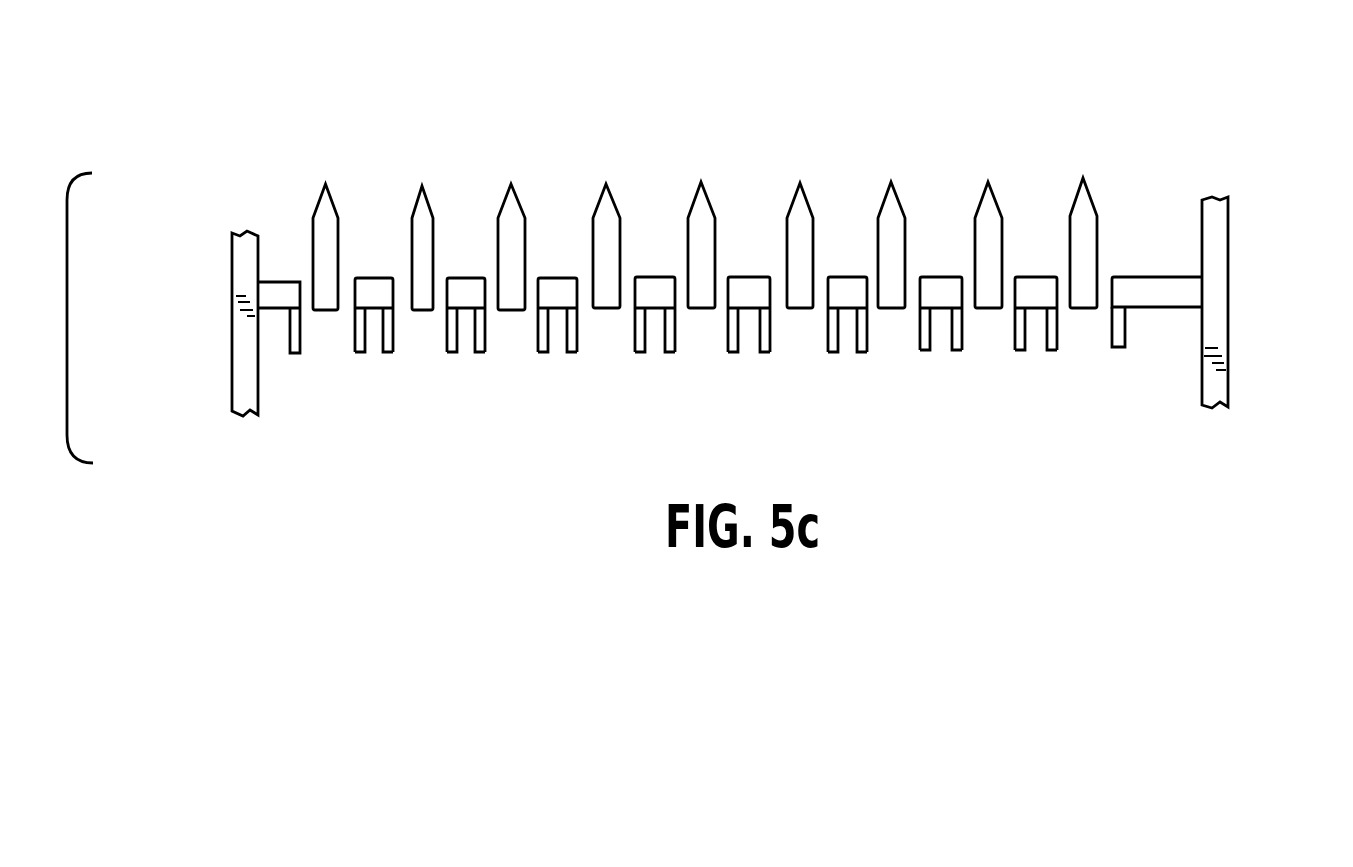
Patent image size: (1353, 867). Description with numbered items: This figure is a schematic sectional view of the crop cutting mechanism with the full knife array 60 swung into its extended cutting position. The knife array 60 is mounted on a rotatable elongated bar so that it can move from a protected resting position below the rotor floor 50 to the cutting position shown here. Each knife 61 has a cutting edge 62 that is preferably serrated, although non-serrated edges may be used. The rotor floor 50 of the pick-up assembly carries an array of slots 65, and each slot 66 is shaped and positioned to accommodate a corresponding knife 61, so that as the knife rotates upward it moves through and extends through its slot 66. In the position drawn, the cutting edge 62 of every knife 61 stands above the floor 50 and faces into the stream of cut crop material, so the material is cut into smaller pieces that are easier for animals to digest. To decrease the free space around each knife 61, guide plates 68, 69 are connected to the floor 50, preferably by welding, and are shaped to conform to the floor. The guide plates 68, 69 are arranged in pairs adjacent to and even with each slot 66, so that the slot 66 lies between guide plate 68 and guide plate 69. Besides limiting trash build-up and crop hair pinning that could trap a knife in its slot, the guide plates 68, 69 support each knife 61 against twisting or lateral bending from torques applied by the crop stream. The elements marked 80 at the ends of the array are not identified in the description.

The rotor floor 50 is at (1172, 297).
The array of knives 60 is at (296, 192).
The knife 61 is at (510, 187).
The cutting edge 62 is at (612, 220).
The array of slots 65 is at (1128, 228).
The slot 66 is at (355, 288).
The guide plate 68 is at (638, 350).
The guide plate 69 is at (668, 350).
The support bar 80 is at (232, 322).